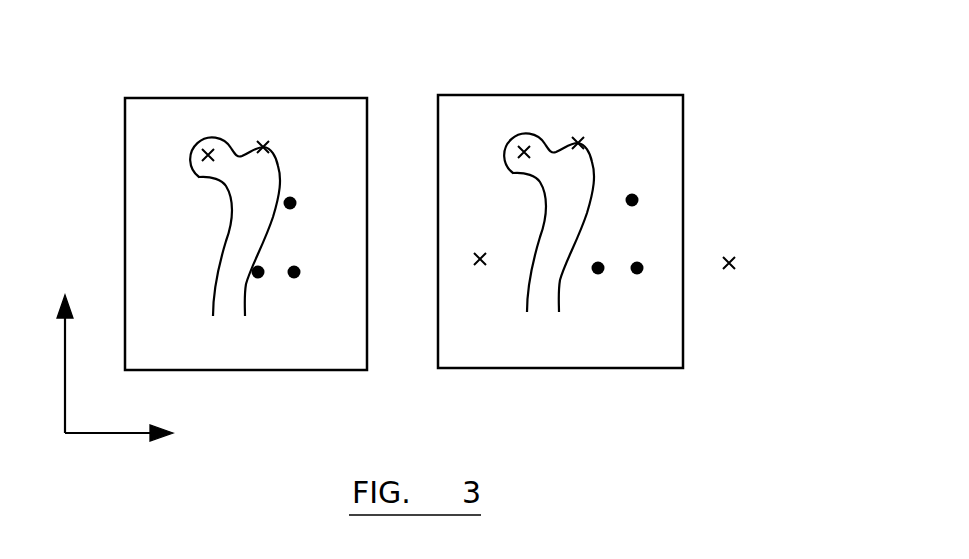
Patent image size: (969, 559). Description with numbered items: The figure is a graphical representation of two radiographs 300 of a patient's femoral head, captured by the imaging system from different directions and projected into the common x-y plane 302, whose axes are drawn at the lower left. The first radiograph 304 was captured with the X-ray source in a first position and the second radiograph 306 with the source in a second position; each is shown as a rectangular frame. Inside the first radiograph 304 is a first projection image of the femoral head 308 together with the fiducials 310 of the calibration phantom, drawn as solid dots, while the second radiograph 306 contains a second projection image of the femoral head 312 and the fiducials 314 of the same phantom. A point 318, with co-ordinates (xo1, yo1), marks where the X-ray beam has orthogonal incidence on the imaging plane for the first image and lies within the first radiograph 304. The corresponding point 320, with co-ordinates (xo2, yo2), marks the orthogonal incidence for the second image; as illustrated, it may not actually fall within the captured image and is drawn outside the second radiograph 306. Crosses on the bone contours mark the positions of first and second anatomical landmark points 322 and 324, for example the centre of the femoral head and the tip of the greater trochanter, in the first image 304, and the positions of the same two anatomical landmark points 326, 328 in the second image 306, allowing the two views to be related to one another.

The radiographs 300 is at (721, 75).
The x-y plane 302 is at (104, 441).
The first radiograph 304 is at (600, 370).
The second radiograph 306 is at (278, 371).
The first projection image of the femoral head 308 is at (550, 135).
The fiducials 310 is at (652, 230).
The second projection image of the femoral head 312 is at (233, 135).
The fiducials 314 is at (312, 235).
The point of orthogonal incidence for the first image 318 is at (483, 265).
The point of orthogonal incidence for the second image 320 is at (733, 268).
The first anatomical landmark point 322 is at (524, 150).
The second anatomical landmark point 324 is at (578, 143).
The first anatomical landmark point 326 is at (208, 150).
The second anatomical landmark point 328 is at (263, 147).